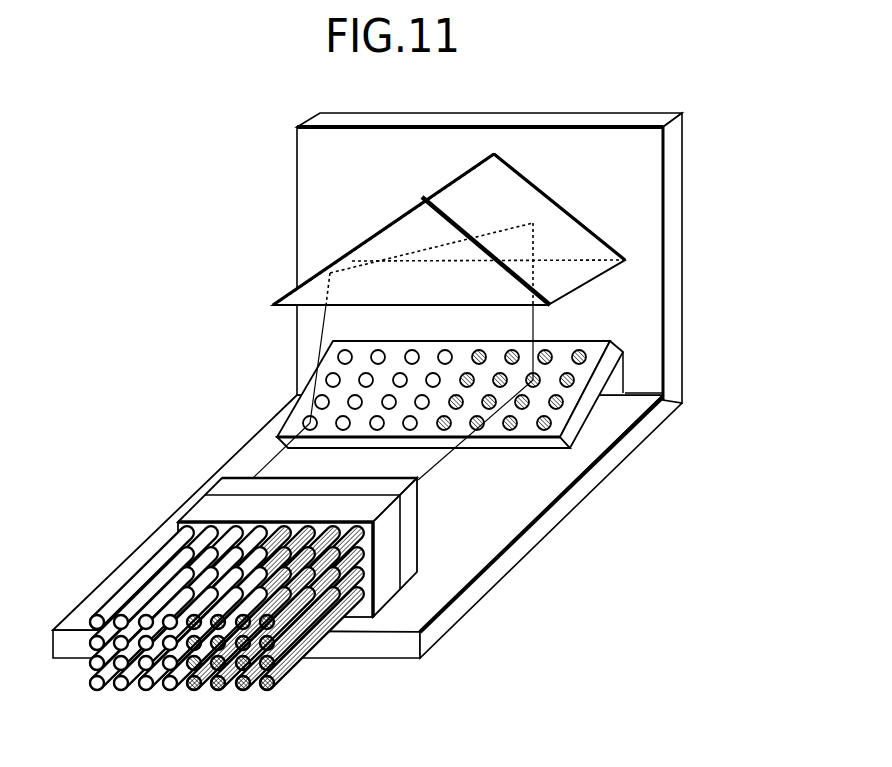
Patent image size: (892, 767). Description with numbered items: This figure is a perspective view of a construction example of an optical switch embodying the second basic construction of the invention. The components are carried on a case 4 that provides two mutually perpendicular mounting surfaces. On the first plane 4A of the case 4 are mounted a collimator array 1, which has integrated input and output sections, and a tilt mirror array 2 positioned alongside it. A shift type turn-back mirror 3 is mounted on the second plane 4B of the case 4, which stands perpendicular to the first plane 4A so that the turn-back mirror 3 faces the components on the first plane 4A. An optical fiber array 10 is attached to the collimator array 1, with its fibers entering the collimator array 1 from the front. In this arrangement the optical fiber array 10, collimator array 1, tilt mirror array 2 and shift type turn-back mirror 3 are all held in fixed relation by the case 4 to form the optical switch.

The collimator array 1 is at (412, 548).
The tilt mirror array 2 is at (302, 402).
The shift type turn-back mirror 3 is at (543, 190).
The case 4 is at (378, 526).
The first plane 4A is at (497, 492).
The second plane 4B is at (638, 288).
The optical fiber array 10 is at (388, 587).